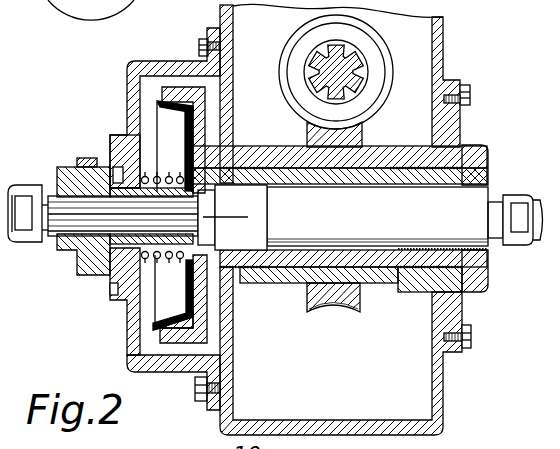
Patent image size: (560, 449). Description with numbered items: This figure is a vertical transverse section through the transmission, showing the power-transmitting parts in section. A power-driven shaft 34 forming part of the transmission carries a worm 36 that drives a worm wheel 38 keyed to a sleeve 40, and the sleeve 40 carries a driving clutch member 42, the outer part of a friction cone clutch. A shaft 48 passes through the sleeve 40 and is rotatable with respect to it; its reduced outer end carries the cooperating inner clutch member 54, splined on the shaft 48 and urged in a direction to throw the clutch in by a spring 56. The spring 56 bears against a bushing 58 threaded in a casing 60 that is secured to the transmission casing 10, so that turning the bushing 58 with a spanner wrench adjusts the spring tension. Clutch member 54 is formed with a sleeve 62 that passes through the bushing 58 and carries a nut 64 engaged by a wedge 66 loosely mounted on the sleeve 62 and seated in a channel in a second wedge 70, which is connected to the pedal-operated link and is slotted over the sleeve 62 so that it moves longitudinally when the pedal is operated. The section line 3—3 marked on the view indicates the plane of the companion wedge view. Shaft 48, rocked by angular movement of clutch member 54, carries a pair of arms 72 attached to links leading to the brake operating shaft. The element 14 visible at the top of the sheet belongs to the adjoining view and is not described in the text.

The section line 3— 3 is at (5, 245).
The housing 10 is at (445, 383).
The adjacent figure element 14 is at (79, 0).
The power-driven shaft 34 is at (358, 60).
The worm 36 is at (372, 90).
The worm wheel 38 is at (308, 302).
The sleeve 40 is at (362, 256).
The driving clutch member 42 is at (200, 97).
The shaft 48 is at (462, 213).
The cooperating clutch member 54 is at (177, 113).
The spring 56 is at (173, 250).
The bushing 58 is at (108, 267).
The casing 60 is at (178, 362).
The sleeve 62 is at (75, 160).
The nut 64 is at (62, 248).
The wedge 66 is at (77, 264).
The wedge 70 is at (110, 150).
The arms 72 is at (23, 203).